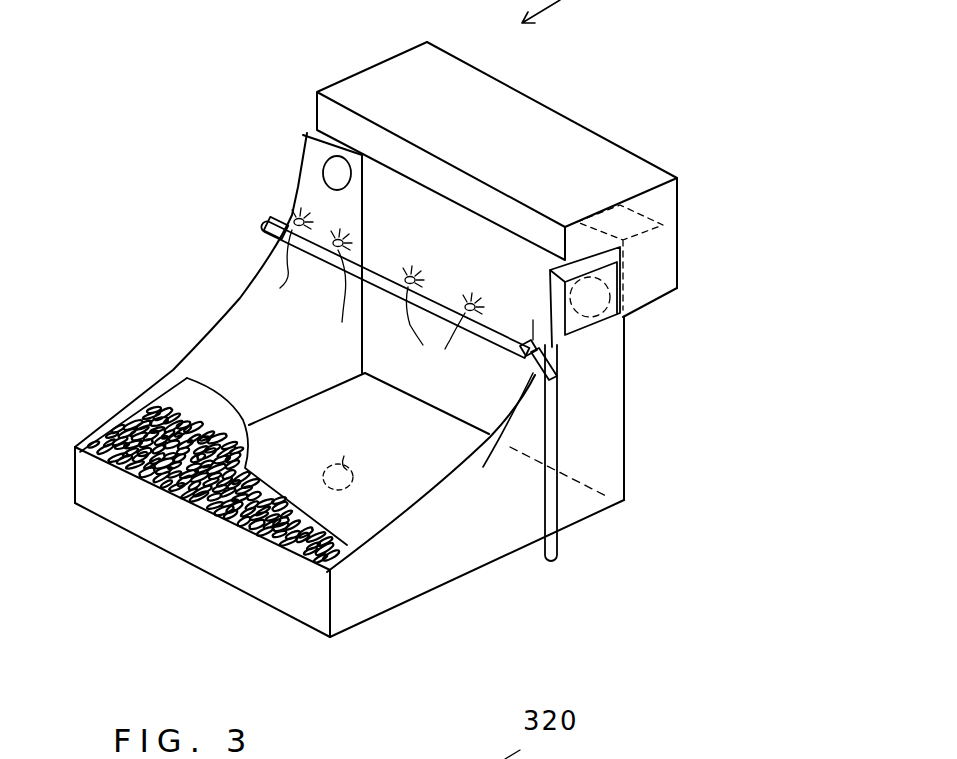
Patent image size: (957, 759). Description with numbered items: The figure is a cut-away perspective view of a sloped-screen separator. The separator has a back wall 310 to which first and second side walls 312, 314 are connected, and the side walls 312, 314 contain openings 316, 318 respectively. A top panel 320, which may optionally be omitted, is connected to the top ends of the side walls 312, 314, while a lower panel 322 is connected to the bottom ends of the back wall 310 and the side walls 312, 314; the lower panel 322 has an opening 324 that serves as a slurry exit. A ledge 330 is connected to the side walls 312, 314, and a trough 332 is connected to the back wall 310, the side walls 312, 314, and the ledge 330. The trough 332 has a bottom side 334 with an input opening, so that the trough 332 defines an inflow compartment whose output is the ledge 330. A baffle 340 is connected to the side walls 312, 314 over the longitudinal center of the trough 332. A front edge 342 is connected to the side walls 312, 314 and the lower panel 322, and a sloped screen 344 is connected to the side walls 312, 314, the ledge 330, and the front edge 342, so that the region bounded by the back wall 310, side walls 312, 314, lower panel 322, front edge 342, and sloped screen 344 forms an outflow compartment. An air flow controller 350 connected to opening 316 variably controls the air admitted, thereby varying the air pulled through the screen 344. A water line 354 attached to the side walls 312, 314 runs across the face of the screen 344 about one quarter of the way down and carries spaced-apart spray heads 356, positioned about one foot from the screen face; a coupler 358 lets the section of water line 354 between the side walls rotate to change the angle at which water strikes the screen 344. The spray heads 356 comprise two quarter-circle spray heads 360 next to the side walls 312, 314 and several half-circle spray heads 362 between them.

The back wall 310 is at (627, 390).
The first side wall 312 is at (373, 597).
The second side wall 314 is at (220, 347).
The opening 316 is at (603, 323).
The opening 318 is at (327, 162).
The top panel 320 is at (517, 115).
The lower panel 322 is at (170, 522).
The opening 324 is at (369, 431).
The ledge 330 is at (540, 235).
The trough 332 is at (663, 258).
The bottom side 334 is at (653, 302).
The baffle 340 is at (677, 222).
The front edge 342 is at (240, 567).
The sloped screen 344 is at (130, 413).
The air flow controller 350 is at (622, 352).
The water line 354 is at (545, 500).
The spray heads 356 is at (333, 262).
The coupler 358 is at (496, 439).
The quarter-circle spray heads 360 is at (292, 222).
The half-circle spray heads 362 is at (487, 296).